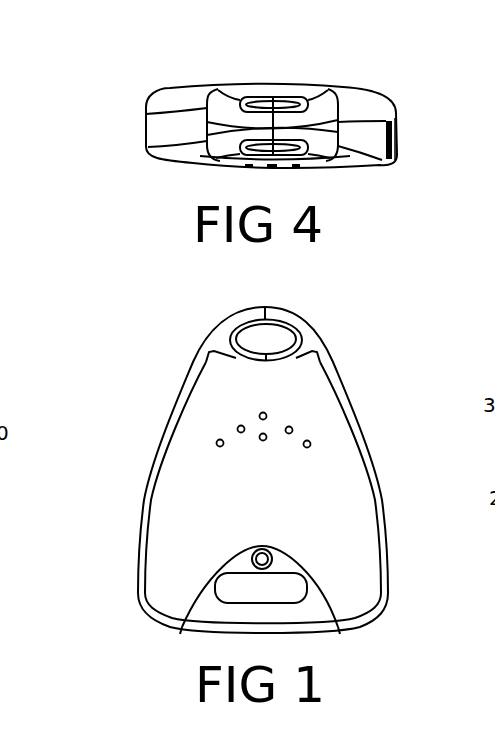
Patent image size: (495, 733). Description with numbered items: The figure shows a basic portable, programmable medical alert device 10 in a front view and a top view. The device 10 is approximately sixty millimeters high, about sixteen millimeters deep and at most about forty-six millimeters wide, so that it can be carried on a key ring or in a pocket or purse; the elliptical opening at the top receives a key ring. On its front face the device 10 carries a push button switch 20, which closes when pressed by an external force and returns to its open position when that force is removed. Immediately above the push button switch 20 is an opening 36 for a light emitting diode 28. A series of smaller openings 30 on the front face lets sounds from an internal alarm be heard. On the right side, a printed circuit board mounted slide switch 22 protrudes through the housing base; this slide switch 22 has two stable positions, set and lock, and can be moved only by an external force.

In FIG. 4, the medical alert device 10 is at (137, 130).
In FIG. 1, the medical alert device 10 is at (354, 360).
In FIG. 4, the slide switch 22 is at (397, 132).
In FIG. 1, the speaker apertures 30 is at (250, 398).
In FIG. 1, the light emitting diode 28 is at (272, 552).
In FIG. 1, the opening 36 is at (252, 557).
In FIG. 1, the push button switch 20 is at (272, 588).